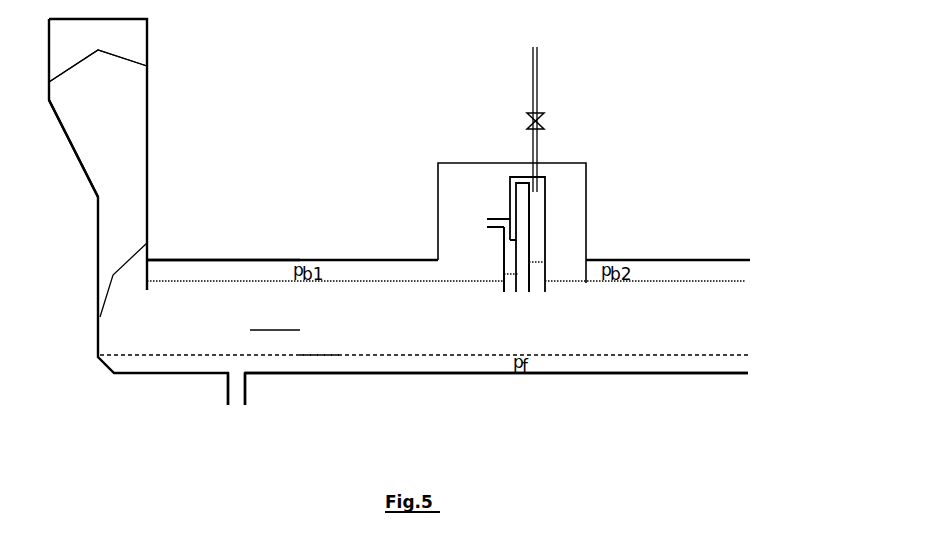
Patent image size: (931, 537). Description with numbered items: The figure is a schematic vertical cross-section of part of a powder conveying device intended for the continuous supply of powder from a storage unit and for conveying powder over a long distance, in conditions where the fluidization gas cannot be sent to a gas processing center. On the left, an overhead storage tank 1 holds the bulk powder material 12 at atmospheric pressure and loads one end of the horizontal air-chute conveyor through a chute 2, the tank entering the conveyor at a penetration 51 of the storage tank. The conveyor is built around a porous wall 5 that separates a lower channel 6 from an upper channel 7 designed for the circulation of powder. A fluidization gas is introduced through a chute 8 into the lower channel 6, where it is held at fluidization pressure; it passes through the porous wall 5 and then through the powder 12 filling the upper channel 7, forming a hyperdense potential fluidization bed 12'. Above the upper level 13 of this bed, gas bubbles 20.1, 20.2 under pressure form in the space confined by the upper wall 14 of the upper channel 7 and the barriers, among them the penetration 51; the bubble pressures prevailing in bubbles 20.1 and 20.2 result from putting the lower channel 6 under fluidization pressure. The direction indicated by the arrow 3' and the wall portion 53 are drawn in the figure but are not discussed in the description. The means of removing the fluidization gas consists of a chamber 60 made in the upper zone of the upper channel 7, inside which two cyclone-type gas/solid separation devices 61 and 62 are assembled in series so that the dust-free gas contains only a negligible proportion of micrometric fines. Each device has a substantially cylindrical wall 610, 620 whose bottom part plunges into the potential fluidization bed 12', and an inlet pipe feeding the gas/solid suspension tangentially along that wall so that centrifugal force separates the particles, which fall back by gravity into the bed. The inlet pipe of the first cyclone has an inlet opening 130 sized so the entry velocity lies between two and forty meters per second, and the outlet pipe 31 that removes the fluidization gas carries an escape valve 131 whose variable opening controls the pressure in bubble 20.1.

The overhead storage tank 1 is at (397, 212).
The chute 2 is at (97, 229).
The gas flow direction 3' is at (354, 99).
The porous wall 5 is at (422, 355).
The lower channel 6 is at (482, 362).
The upper channel 7 is at (277, 323).
The chute 8 is at (228, 388).
The bulk powder material 12 is at (98, 110).
The potential fluidization bed 12' is at (320, 332).
The upper level of the potential fluidization bed 13 is at (257, 280).
The upper wall 14 is at (323, 258).
The gas bubble 20.1 is at (218, 273).
The gas bubble 20.2 is at (666, 272).
The outlet pipe 31 is at (554, 114).
The penetration of the storage tank 51 is at (147, 287).
The chamber wall section 53 is at (589, 263).
The chamber 60 is at (487, 143).
The gas/solid separation device 61 is at (507, 251).
The gas/solid separation device 62 is at (537, 210).
The inlet opening 130 is at (484, 220).
The escape valve 131 is at (565, 108).
The cylindrical wall 610 is at (506, 256).
The cylindrical wall 620 is at (545, 251).